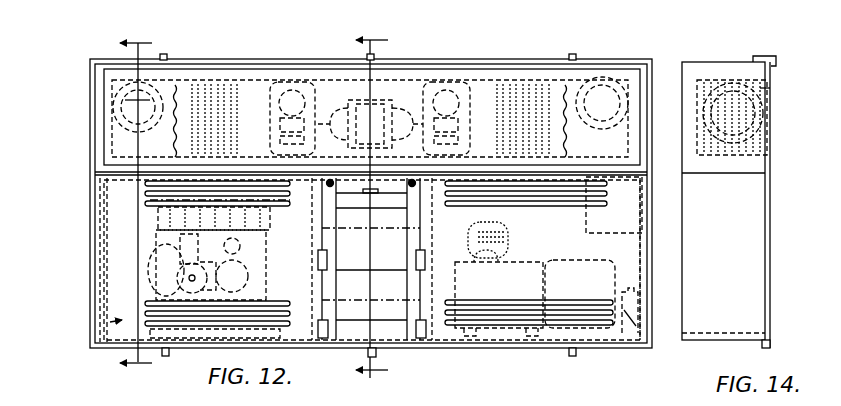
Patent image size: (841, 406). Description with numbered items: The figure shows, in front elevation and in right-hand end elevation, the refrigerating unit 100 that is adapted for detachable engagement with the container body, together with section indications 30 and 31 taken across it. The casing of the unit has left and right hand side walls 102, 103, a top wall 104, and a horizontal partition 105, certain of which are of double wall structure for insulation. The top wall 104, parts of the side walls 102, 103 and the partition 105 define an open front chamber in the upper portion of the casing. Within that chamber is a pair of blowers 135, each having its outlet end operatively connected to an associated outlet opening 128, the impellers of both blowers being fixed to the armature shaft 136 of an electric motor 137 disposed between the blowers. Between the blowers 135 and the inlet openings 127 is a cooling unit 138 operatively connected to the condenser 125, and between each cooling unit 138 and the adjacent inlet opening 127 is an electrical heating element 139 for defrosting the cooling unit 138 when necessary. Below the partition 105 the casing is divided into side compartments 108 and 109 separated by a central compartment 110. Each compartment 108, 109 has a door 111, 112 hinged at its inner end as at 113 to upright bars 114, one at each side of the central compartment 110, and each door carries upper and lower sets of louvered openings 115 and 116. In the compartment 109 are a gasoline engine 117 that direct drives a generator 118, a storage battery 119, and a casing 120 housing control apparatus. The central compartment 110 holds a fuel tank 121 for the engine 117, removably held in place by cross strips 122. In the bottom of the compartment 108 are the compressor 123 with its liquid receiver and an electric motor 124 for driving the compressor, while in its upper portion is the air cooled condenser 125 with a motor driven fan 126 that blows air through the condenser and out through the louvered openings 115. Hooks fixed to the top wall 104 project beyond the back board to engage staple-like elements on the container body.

In FIG. 12, the refrigerating unit 100 is at (90, 81).
In FIG. 12, the left hand side wall 102 is at (92, 272).
In FIG. 14, the right hand side wall 103 is at (752, 232).
In FIG. 12, the top wall 104 is at (166, 56).
In FIG. 14, the top wall 104 is at (718, 62).
In FIG. 12, the horizontal partition 105 is at (640, 308).
In FIG. 12, the side compartment 108 is at (100, 320).
In FIG. 12, the side compartment 109 is at (606, 352).
In FIG. 12, the central compartment 110 is at (346, 183).
In FIG. 12, the door 111 is at (112, 292).
In FIG. 12, the door 112 is at (628, 260).
In FIG. 12, the hinge 113 is at (318, 262).
In FIG. 12, the upright bars 114 is at (328, 278).
In FIG. 12, the upper set of louvered openings 115 is at (145, 190).
In FIG. 12, the lower set of louvered openings 116 is at (140, 324).
In FIG. 12, the gasoline engine 117 is at (522, 258).
In FIG. 12, the generator 118 is at (582, 262).
In FIG. 12, the storage battery 119 is at (645, 352).
In FIG. 12, the casing 120 is at (620, 236).
In FIG. 12, the fuel tank 121 is at (350, 332).
In FIG. 12, the cross strips 122 is at (354, 230).
In FIG. 12, the compressor 123 is at (154, 264).
In FIG. 12, the electric motor 124 is at (252, 262).
In FIG. 12, the air cooled condenser 125 is at (152, 217).
In FIG. 12, the motor driven fan 126 is at (150, 232).
In FIG. 12, the openings 127 is at (118, 104).
In FIG. 12, the openings 128 is at (300, 76).
In FIG. 12, the blowers 135 is at (257, 134).
In FIG. 14, the blowers 135 is at (699, 84).
In FIG. 12, the armature shaft 136 is at (370, 115).
In FIG. 12, the electric motor 137 is at (390, 111).
In FIG. 14, the electric motor 137 is at (738, 158).
In FIG. 12, the cooling unit 138 is at (240, 84).
In FIG. 14, the cooling unit 138 is at (772, 89).
In FIG. 12, the electrical heating element 139 is at (605, 36).
In FIG. 12, the section line 30 is at (136, 200).
In FIG. 12, the section line 31 is at (372, 201).